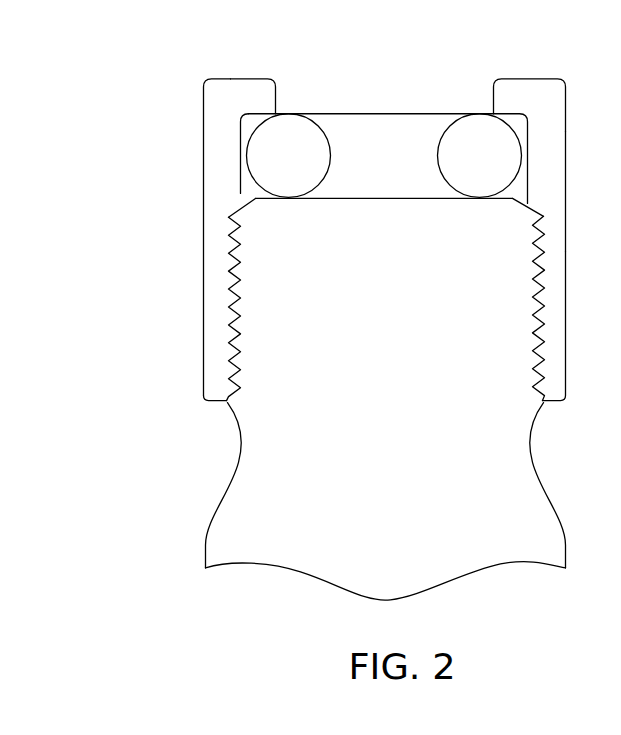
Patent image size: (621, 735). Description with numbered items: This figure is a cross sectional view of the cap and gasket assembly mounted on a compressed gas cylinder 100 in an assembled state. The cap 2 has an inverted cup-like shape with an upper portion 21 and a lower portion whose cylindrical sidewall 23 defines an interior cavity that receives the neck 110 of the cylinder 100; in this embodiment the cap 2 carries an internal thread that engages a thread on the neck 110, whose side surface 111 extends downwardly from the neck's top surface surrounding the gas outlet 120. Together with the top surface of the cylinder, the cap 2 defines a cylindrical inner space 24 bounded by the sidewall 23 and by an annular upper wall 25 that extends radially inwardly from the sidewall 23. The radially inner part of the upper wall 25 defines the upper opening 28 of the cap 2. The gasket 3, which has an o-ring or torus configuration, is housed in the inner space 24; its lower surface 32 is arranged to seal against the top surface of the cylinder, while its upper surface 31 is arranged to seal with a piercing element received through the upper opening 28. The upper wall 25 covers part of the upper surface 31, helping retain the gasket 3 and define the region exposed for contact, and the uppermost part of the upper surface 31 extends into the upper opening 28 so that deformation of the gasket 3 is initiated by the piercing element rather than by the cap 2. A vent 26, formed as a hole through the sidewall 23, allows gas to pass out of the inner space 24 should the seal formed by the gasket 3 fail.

The cap 2 is at (558, 172).
The gasket 3 is at (293, 117).
The upper portion 21 is at (210, 77).
The sidewall 23 is at (567, 338).
The inner space 24 is at (252, 190).
The upper wall 25 is at (262, 85).
The vent 26 is at (248, 197).
The upper opening 28 is at (502, 75).
The upper surface 31 is at (480, 110).
The lower surface 32 is at (480, 198).
The compressed gas cylinder 100 is at (179, 571).
The neck 110 is at (545, 421).
The side surface 111 is at (235, 423).
The gas outlet 120 is at (385, 198).